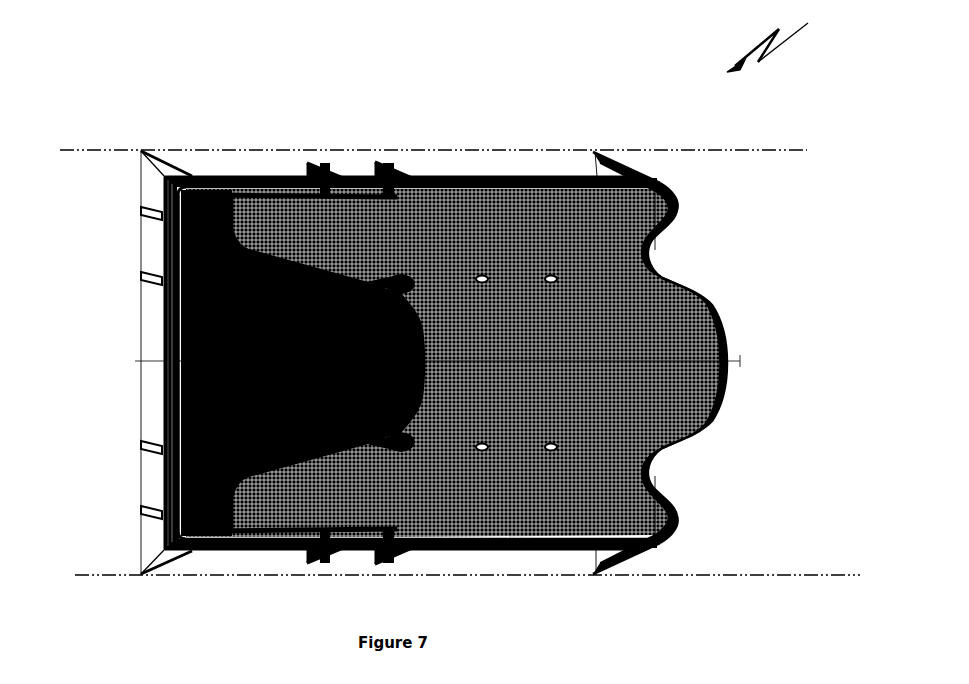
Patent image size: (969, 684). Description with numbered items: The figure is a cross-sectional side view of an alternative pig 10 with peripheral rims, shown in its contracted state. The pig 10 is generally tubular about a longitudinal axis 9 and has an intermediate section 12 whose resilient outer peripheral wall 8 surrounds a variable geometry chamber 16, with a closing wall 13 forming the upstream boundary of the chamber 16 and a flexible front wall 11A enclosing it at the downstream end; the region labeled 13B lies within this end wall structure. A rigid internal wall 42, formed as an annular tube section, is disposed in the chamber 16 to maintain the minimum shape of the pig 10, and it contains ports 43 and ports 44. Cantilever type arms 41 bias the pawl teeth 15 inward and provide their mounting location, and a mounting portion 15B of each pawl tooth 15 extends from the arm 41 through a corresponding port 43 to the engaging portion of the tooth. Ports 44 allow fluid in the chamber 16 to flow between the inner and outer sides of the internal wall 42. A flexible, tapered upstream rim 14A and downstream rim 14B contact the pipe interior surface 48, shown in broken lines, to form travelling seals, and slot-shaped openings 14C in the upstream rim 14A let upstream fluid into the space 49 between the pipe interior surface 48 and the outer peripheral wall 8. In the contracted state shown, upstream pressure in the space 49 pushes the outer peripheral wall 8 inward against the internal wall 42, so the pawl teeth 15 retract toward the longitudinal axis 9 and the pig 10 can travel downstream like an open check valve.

The outer peripheral wall 8 is at (435, 177).
The longitudinal axis 9 is at (752, 363).
The pig 10 is at (778, 47).
The front wall 11A is at (704, 290).
The intermediate section 12 is at (498, 177).
The closing wall 13 is at (165, 252).
The end wall body 13B is at (302, 363).
The upstream rim 14A is at (141, 150).
The downstream rim 14B is at (597, 150).
The openings 14C is at (150, 210).
The pawl teeth 15 is at (320, 165).
The mounting portion 15B is at (393, 197).
The variable geometry chamber 16 is at (490, 251).
The cantilever type arm 41 is at (335, 198).
The internal wall 42 is at (262, 208).
The ports 43 is at (352, 175).
The ports 44 is at (551, 272).
The pipe interior surface 48 is at (797, 158).
The space 49 is at (468, 578).